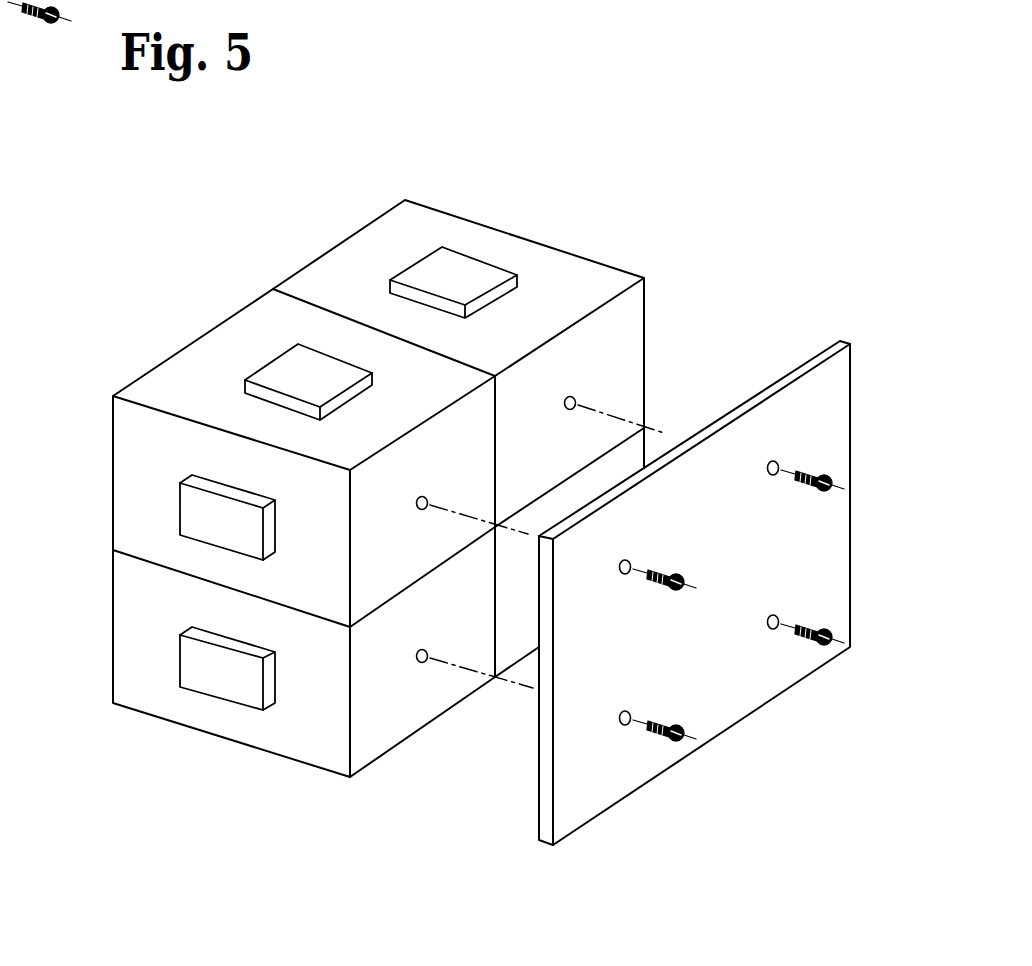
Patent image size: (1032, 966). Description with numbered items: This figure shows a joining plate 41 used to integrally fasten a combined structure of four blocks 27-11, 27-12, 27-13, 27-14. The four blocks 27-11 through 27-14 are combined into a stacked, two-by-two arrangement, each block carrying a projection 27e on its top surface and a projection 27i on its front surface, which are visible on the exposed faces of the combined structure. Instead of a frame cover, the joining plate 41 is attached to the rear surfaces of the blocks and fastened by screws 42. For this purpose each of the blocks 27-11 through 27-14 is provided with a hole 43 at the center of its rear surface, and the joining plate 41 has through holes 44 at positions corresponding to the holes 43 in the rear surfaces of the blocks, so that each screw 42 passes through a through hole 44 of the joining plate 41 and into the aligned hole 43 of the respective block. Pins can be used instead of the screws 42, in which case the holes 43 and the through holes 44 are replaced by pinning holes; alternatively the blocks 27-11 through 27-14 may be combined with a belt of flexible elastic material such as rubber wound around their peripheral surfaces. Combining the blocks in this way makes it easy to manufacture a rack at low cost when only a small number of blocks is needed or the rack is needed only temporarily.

The block 27-11 is at (398, 720).
The block 27-12 is at (632, 455).
The block 27-13 is at (371, 567).
The block 27-14 is at (627, 323).
The engaging projection on top face 27e is at (290, 367).
The engaging projection on front face 27i is at (197, 513).
The joining plate 41 is at (582, 793).
The screw 42 is at (813, 477).
The hole 43 is at (578, 401).
The through hole 44 is at (778, 460).